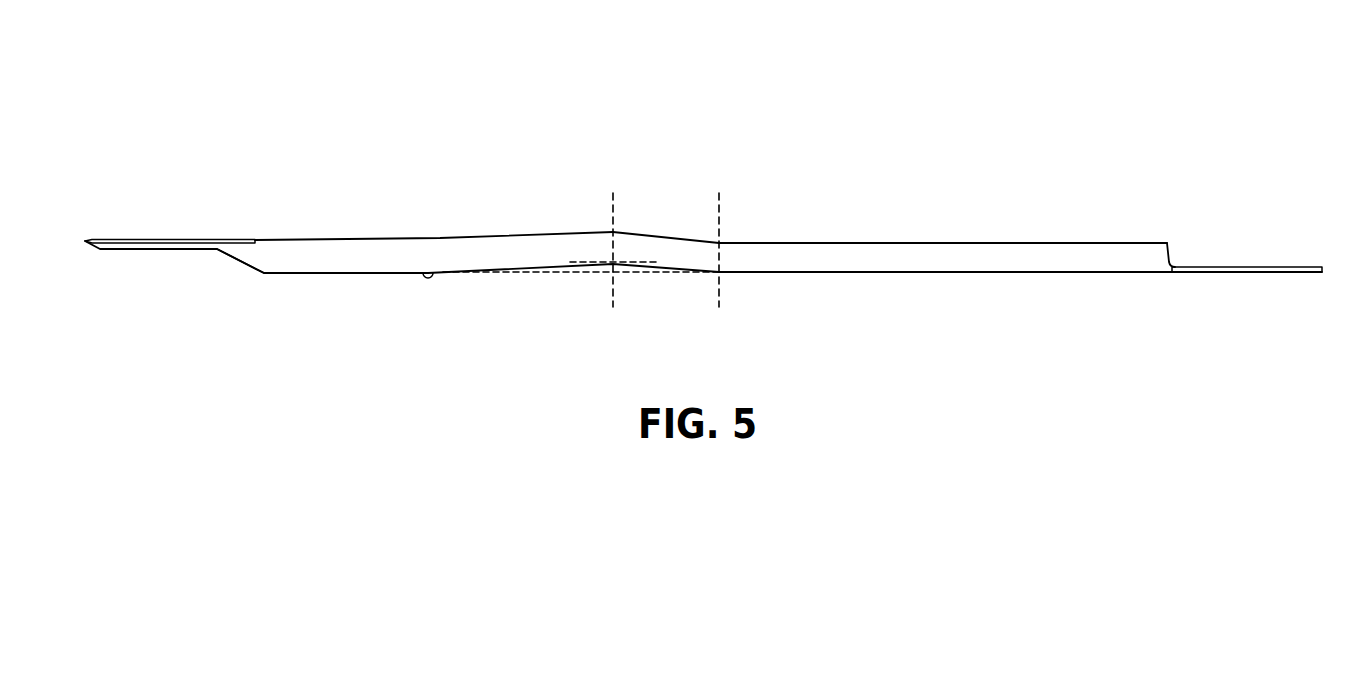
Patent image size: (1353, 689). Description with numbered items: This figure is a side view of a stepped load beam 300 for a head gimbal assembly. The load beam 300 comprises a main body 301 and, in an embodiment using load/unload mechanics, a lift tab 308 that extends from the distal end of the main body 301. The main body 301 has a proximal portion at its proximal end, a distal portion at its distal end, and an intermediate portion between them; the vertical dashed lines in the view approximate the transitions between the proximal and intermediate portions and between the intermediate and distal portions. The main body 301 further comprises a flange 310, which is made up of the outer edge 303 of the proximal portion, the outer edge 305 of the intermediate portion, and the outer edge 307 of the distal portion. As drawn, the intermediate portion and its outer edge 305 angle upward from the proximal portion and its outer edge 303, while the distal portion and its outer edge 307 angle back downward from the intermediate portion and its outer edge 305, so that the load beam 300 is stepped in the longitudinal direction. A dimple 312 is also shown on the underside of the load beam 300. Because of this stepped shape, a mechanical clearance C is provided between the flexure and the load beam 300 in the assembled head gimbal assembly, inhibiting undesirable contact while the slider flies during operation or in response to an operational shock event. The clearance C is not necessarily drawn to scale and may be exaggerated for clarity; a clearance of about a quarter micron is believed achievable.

The stepped load beam 300 is at (318, 76).
The main body 301 is at (1282, 272).
The outer edge of the proximal portion 303 is at (893, 257).
The outer edge of the intermediate portion 305 is at (678, 253).
The outer edge of the distal portion 307 is at (433, 253).
The lift tab 308 is at (168, 243).
The flange 310 is at (273, 257).
The dimple 312 is at (418, 290).
The mechanical clearance C is at (617, 266).